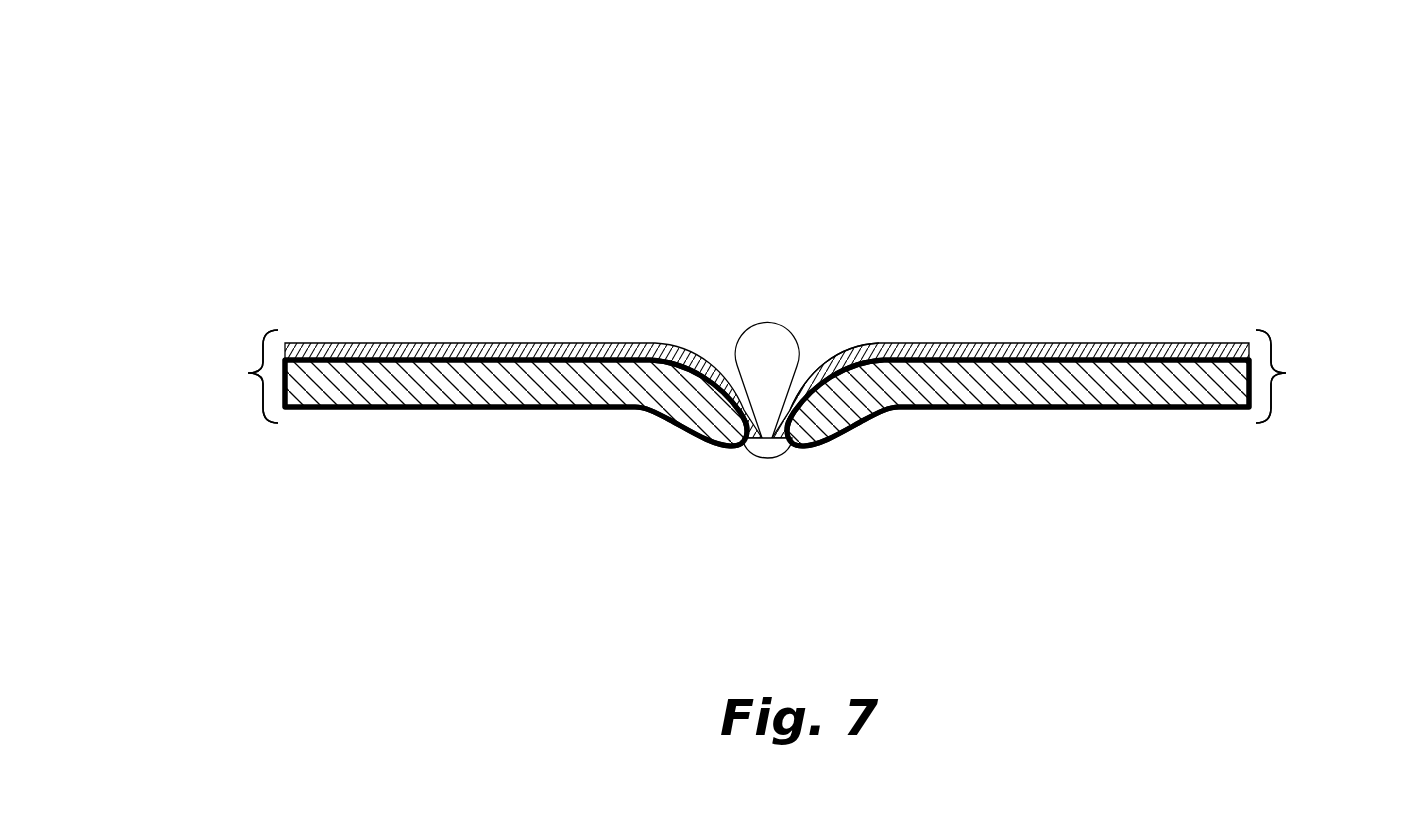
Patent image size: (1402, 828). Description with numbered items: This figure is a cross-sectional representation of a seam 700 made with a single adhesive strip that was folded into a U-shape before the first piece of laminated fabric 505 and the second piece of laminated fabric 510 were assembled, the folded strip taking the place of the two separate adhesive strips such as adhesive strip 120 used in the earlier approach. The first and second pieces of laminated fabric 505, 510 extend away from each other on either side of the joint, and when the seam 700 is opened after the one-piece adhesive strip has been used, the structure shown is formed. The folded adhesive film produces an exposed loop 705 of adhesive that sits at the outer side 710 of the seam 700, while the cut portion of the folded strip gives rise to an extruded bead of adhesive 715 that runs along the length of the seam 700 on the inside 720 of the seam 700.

The seam 700 is at (423, 130).
The exposed loop 705 is at (775, 305).
The outer side 710 is at (462, 297).
The extruded bead of adhesive 715 is at (765, 450).
The inside 720 is at (460, 430).
The adhesive strip 120 is at (878, 308).
The first piece of laminated fabric 505 is at (242, 375).
The second piece of laminated fabric 510 is at (1298, 375).